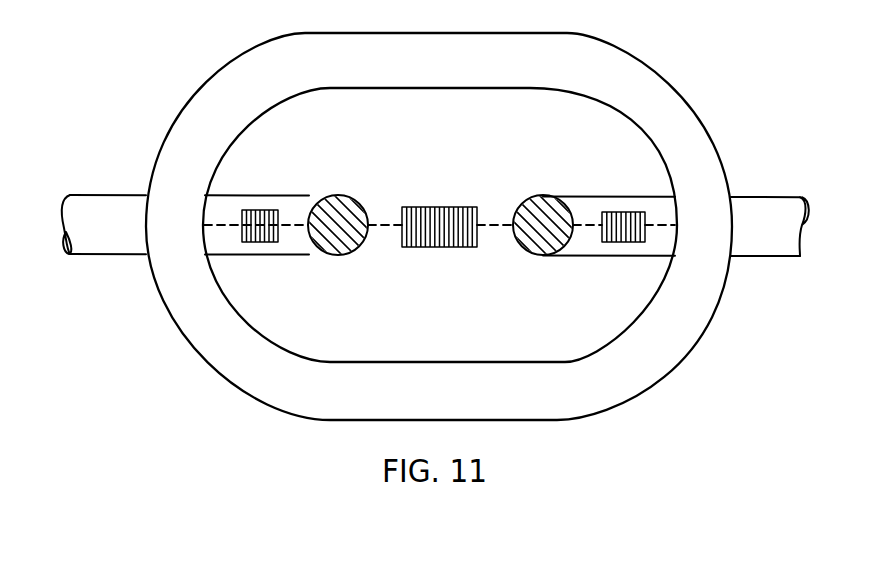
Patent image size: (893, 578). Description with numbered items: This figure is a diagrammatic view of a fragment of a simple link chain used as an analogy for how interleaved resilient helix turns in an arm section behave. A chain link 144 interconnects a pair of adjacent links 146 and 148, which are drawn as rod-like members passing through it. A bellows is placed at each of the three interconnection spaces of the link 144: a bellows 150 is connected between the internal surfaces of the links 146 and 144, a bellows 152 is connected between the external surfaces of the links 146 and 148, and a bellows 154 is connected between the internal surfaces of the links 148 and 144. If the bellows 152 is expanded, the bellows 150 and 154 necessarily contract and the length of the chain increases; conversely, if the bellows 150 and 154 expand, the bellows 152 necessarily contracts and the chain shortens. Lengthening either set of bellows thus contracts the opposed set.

The chain link 144 is at (247, 385).
The adjacent link 146 is at (93, 205).
The adjacent link 148 is at (763, 202).
The bellows 150 is at (258, 213).
The bellows 152 is at (425, 208).
The bellows 154 is at (610, 220).